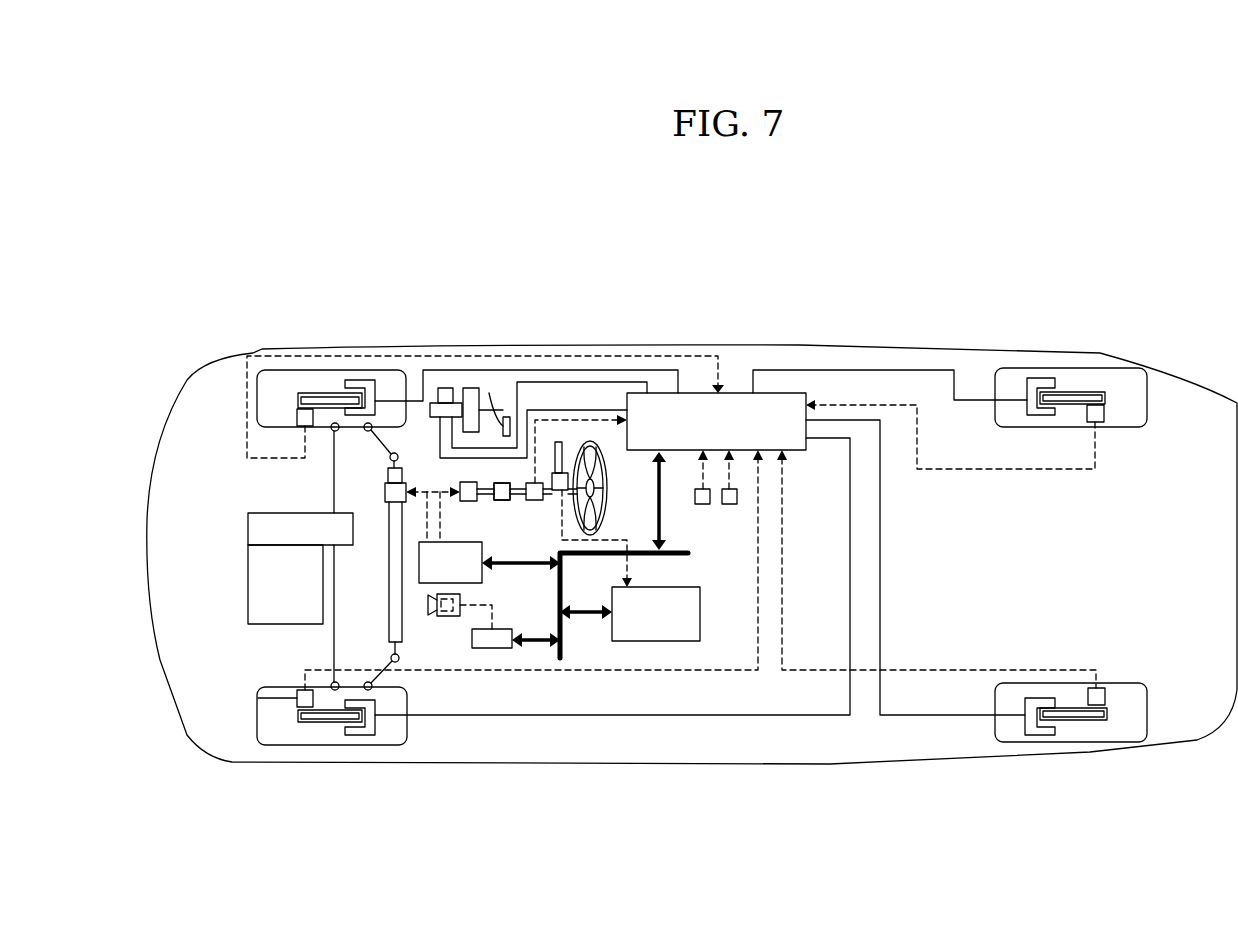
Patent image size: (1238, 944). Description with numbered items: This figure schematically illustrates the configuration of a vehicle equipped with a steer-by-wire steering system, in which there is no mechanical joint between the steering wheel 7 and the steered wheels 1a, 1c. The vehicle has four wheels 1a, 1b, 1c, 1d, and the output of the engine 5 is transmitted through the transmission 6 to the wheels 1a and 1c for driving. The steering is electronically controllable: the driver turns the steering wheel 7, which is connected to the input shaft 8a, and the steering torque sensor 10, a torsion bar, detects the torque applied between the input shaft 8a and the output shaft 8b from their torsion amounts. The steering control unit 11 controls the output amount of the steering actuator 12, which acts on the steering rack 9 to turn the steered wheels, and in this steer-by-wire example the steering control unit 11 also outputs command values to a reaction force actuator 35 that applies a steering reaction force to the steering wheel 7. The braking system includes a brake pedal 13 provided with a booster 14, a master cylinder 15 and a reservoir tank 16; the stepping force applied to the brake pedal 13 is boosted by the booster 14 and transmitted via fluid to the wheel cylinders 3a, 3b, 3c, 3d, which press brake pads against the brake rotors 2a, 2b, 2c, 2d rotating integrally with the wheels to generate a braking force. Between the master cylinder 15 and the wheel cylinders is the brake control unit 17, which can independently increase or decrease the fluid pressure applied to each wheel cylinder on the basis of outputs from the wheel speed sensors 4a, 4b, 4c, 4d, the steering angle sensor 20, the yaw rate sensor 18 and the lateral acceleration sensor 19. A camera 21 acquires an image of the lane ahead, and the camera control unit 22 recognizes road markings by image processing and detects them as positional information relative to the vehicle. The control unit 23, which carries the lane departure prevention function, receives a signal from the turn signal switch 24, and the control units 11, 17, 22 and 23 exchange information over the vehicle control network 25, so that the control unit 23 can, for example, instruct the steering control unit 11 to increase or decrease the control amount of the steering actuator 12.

The wheel 1a is at (260, 372).
The wheel 1b is at (1128, 372).
The wheel 1c is at (265, 738).
The wheel 1d is at (1130, 738).
The brake rotor 2a is at (322, 395).
The brake rotor 2b is at (1095, 394).
The brake rotor 2c is at (325, 718).
The brake rotor 2d is at (1080, 718).
The wheel cylinder 3a is at (368, 385).
The wheel cylinder 3b is at (1030, 380).
The wheel cylinder 3c is at (370, 730).
The wheel cylinder 3d is at (1045, 732).
The wheel speed sensor 4a is at (297, 418).
The wheel speed sensor 4b is at (1100, 422).
The wheel speed sensor 4c is at (297, 698).
The wheel speed sensor 4d is at (1097, 690).
The engine 5 is at (252, 572).
The transmission 6 is at (252, 522).
The steering wheel 7 is at (603, 455).
The input shaft 8a is at (526, 490).
The output shaft 8b is at (485, 497).
The steering rack 9 is at (389, 588).
The steering torque sensor 10 is at (503, 497).
The steering control unit 11 is at (482, 583).
The steering actuator 12 is at (385, 485).
The brake pedal 13 is at (507, 417).
The booster 14 is at (471, 388).
The master cylinder 15 is at (436, 418).
The reservoir tank 16 is at (445, 388).
The brake control unit 17 is at (729, 395).
The yaw rate sensor 18 is at (702, 504).
The lateral acceleration sensor 19 is at (728, 504).
The steering angle sensor 20 is at (510, 483).
The camera 21 is at (455, 610).
The camera control unit 22 is at (490, 648).
The control unit 23 is at (655, 636).
The turn signal switch 24 is at (562, 473).
The vehicle control network 25 is at (688, 553).
The reaction force actuator 35 is at (460, 482).